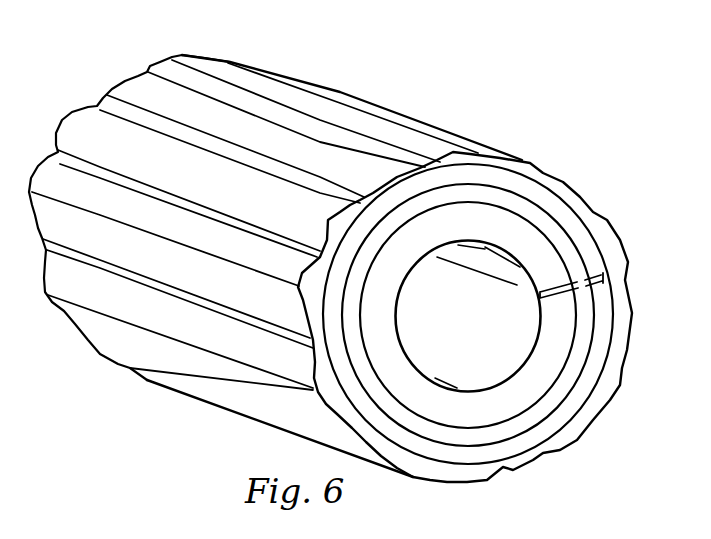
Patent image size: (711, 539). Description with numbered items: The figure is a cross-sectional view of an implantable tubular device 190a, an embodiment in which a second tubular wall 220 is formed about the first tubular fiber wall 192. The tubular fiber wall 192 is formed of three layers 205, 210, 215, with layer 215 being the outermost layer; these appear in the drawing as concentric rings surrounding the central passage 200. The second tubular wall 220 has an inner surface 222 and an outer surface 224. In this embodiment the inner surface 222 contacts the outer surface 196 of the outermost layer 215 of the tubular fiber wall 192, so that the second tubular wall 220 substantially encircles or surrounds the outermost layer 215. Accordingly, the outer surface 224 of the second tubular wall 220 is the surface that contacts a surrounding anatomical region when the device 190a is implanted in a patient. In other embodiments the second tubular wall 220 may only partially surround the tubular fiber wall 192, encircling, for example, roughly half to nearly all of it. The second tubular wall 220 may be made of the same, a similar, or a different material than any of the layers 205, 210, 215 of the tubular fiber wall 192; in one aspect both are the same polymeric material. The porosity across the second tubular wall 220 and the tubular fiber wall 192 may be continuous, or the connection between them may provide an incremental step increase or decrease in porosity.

The implantable tubular device 190a is at (450, 70).
The outer surface 224 is at (143, 92).
The layer 210 is at (530, 212).
The outermost layer 215 is at (574, 224).
The tubular fiber wall 192 is at (590, 298).
The central bore 200 is at (490, 320).
The layer 205 is at (395, 352).
The second tubular wall 220 is at (567, 435).
The inner surface 222 is at (462, 474).
The outer surface 196 is at (503, 463).